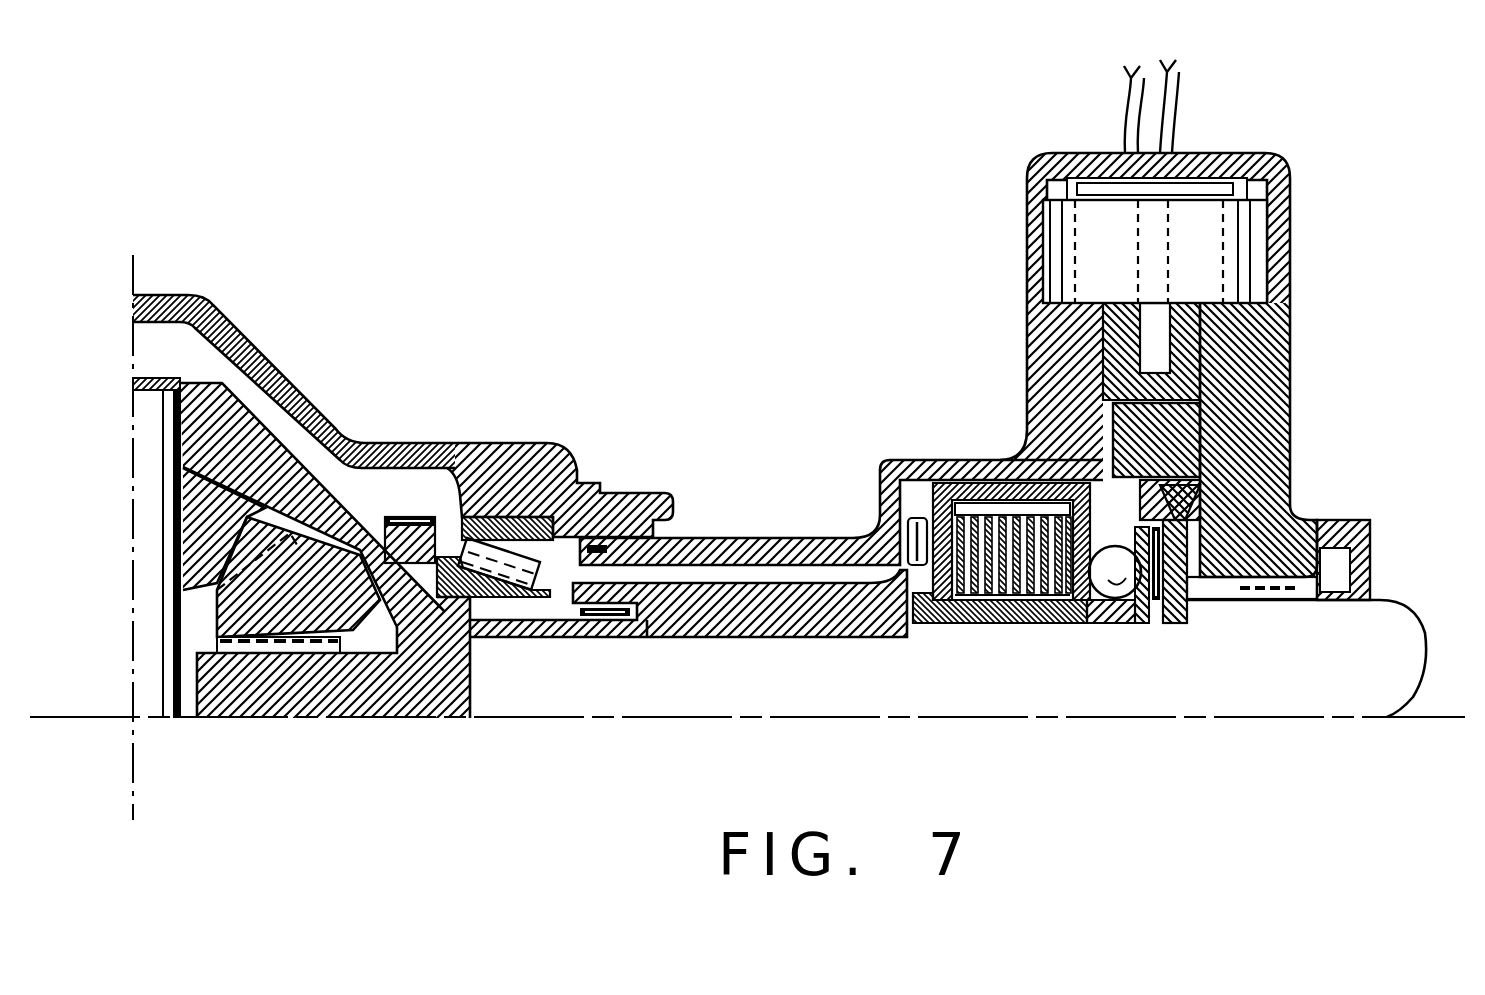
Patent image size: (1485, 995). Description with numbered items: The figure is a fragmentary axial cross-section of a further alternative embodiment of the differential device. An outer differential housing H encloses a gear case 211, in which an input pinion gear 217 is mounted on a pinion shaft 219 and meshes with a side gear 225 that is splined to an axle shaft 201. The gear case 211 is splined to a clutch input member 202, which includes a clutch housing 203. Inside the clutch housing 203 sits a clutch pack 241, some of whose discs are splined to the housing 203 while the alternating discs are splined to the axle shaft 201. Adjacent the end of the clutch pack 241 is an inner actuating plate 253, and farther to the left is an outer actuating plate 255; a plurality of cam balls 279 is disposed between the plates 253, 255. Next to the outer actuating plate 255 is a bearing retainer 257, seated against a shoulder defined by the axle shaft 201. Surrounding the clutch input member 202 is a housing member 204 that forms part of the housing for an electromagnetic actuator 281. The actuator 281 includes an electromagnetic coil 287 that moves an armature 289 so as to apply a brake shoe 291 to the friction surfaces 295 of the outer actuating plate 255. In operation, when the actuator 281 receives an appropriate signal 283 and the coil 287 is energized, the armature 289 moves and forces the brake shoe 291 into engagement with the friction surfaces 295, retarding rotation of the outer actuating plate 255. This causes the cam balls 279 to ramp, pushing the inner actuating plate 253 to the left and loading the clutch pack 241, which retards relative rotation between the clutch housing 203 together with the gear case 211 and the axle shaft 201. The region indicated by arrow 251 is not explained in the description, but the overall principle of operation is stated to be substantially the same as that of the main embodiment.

The outer differential housing H is at (237, 328).
The axle shaft 201 is at (628, 686).
The clutch input member 202 is at (762, 618).
The clutch housing 203 is at (982, 497).
The housing member 204 is at (903, 490).
The gear case 211 is at (294, 407).
The input pinion gear 217 is at (177, 542).
The pinion shaft 219 is at (153, 448).
The side gear 225 is at (270, 612).
The clutch pack 241 is at (1022, 608).
The bearing assembly 251 is at (1178, 686).
The inner actuating plate 253 is at (1093, 605).
The outer actuating plate 255 is at (1140, 627).
The bearing retainer 257 is at (1187, 612).
The cam balls 279 is at (1117, 600).
The electromagnetic actuator 281 is at (1360, 243).
The signal 283 is at (1123, 118).
The electromagnetic coil 287 is at (1045, 228).
The armature 289 is at (1203, 353).
The brake shoe 291 is at (1207, 433).
The friction surfaces 295 is at (1198, 500).